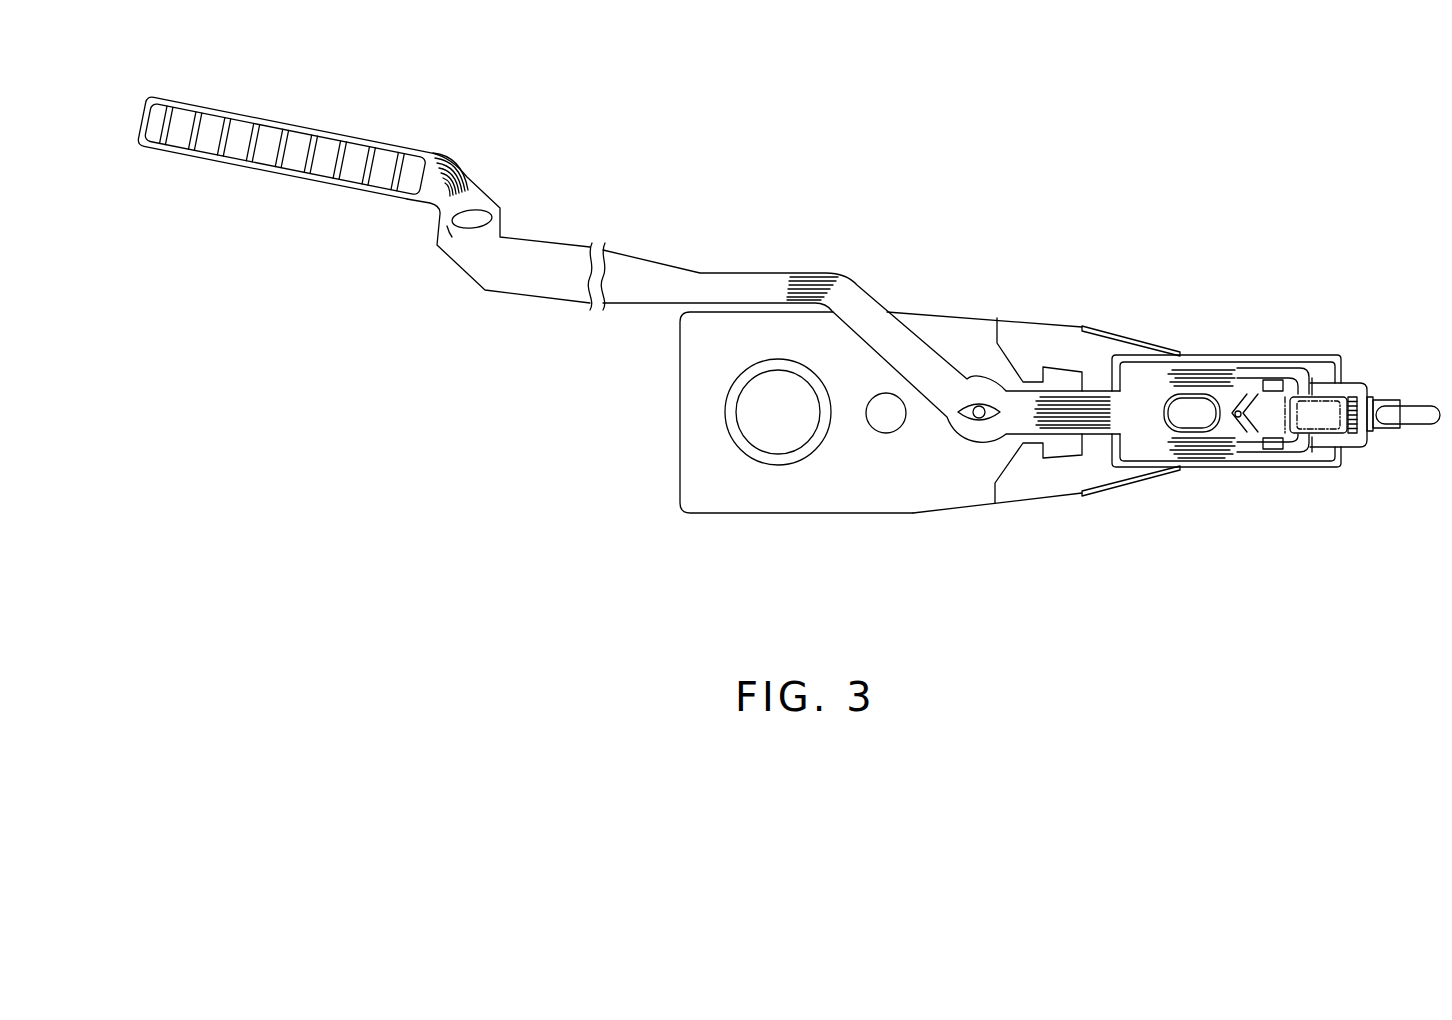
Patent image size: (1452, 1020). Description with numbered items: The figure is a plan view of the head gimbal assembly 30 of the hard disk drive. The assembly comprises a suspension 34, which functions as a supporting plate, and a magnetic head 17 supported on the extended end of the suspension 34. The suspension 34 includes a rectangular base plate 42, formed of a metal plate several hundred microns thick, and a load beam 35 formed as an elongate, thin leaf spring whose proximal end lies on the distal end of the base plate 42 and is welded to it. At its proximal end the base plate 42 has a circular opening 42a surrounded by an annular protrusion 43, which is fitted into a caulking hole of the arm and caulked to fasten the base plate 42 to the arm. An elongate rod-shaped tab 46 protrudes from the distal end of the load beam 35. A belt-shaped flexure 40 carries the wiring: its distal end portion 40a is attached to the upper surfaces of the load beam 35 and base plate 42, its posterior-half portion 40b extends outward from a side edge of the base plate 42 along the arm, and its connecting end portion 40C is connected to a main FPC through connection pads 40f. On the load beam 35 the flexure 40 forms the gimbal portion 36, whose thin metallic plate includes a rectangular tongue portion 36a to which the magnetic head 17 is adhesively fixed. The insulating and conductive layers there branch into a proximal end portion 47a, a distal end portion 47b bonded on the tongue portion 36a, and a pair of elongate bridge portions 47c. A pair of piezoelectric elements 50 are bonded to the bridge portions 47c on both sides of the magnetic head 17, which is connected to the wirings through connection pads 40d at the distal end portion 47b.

The head gimbal assembly 30 is at (1150, 240).
The flexure 40 is at (900, 332).
The distal end portion 40a is at (1063, 410).
The posterior-half portion 40b is at (650, 281).
The connecting end portion 40C is at (378, 143).
The connection pads 40d is at (1366, 425).
The connection pads 40f is at (212, 152).
The suspension 34 is at (1052, 561).
The base plate 42 is at (887, 497).
The circular opening 42a is at (778, 438).
The annular protrusion 43 is at (748, 458).
The load beam 35 is at (1085, 473).
The gimbal portion 36 is at (1360, 542).
The tongue portion 36a is at (1323, 388).
The tab 46 is at (1410, 410).
The proximal end portion 47a is at (1207, 372).
The distal end portion 47b is at (1368, 388).
The bridge portions 47c is at (1278, 372).
The piezoelectric elements 50 is at (1271, 380).
The magnetic head 17 is at (1323, 415).